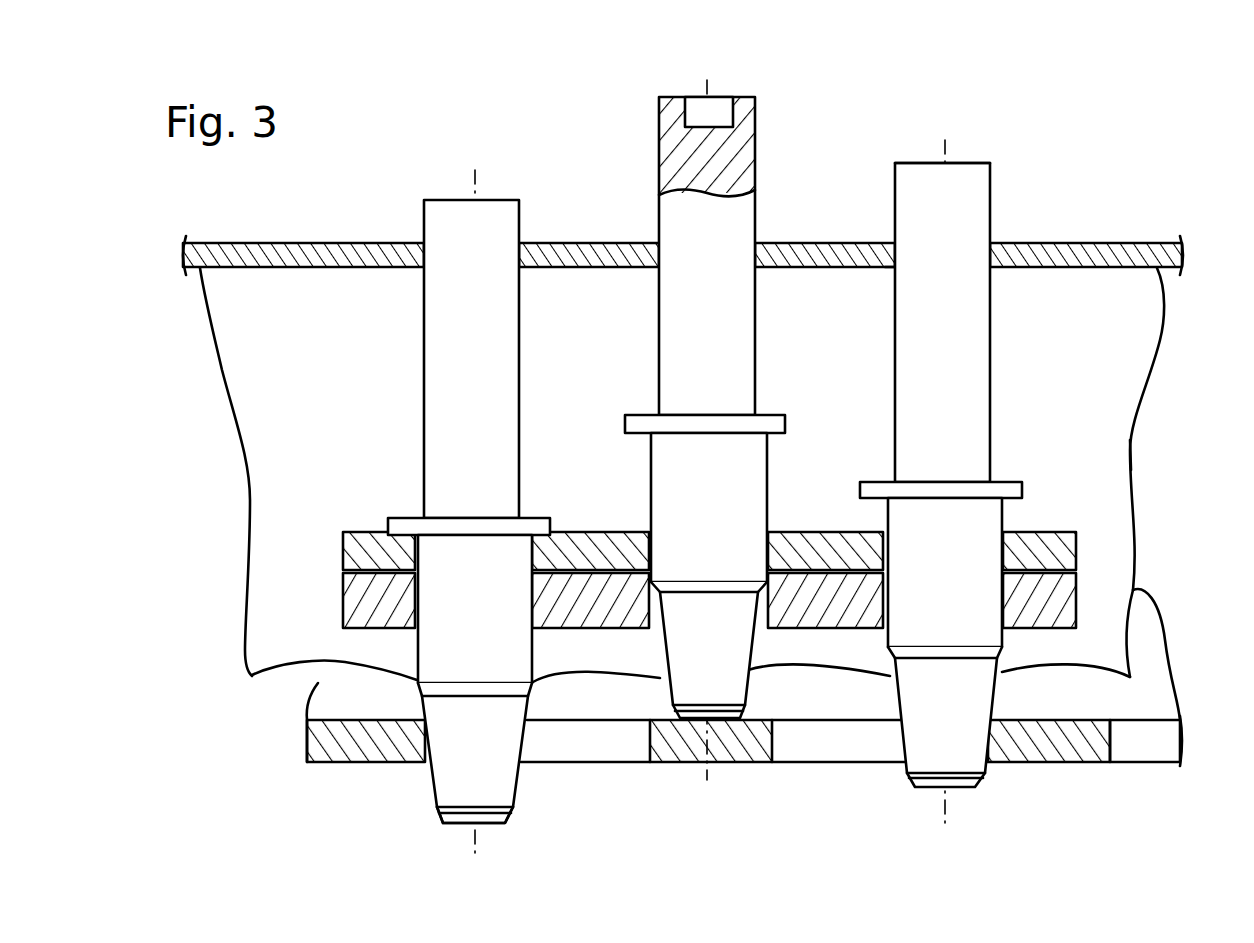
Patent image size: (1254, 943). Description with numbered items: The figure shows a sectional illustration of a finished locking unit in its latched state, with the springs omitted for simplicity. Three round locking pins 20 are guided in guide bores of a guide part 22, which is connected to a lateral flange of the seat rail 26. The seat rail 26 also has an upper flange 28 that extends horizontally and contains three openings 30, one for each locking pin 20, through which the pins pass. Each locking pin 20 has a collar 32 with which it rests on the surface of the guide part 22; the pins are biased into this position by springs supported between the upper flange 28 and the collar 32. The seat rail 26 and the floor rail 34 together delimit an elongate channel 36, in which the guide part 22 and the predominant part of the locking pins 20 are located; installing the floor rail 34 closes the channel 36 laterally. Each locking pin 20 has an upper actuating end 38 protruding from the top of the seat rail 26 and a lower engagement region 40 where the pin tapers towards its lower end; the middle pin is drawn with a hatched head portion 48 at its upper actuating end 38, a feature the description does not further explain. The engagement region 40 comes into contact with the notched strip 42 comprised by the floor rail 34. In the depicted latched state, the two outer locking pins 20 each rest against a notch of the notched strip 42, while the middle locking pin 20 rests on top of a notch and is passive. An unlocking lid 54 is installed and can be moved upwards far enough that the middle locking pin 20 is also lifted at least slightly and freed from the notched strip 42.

The locking pin 20 is at (455, 218).
The guide part 22 is at (1058, 592).
The seat rail 26 is at (1160, 270).
The upper flange 28 is at (1110, 252).
The opening 30 is at (885, 268).
The collar 32 is at (637, 422).
The floor rail 34 is at (340, 745).
The channel 36 is at (1110, 461).
The upper actuating end 38 is at (909, 143).
The lower engagement region 40 is at (524, 789).
The notched strip 42 is at (718, 737).
The slot 48 is at (708, 112).
The unlocking lid 54 is at (363, 557).